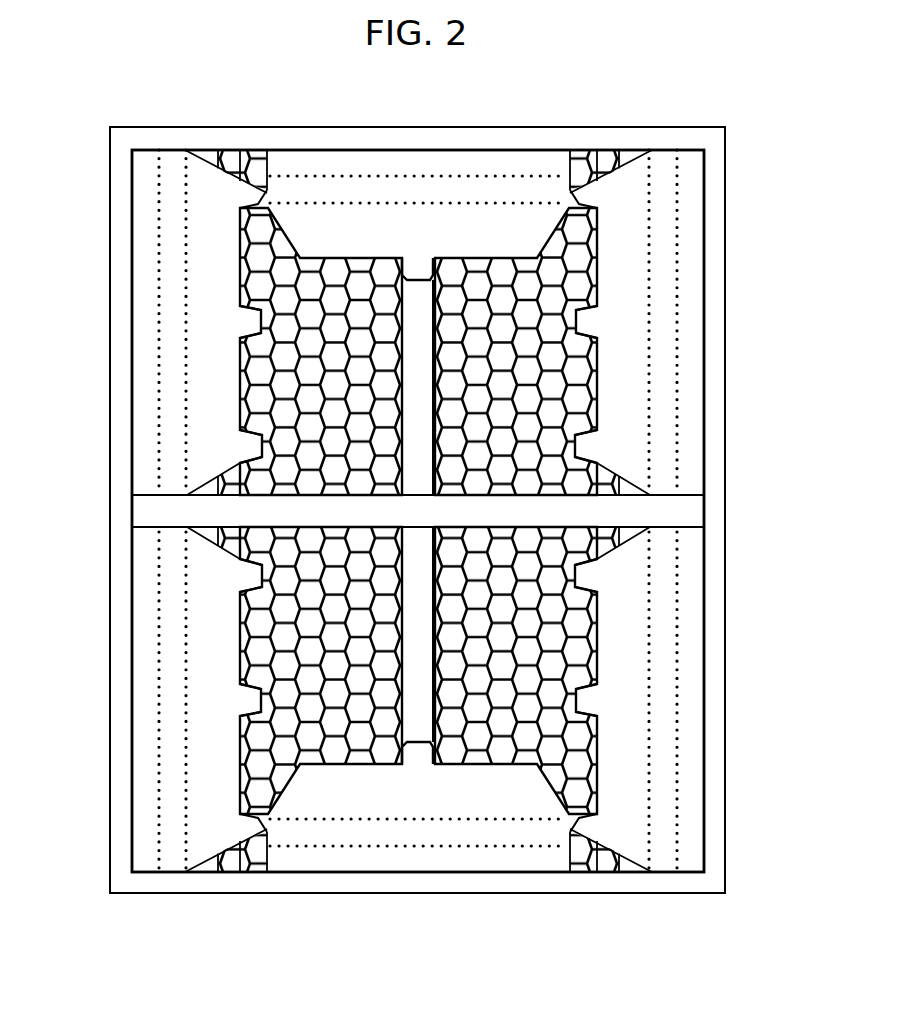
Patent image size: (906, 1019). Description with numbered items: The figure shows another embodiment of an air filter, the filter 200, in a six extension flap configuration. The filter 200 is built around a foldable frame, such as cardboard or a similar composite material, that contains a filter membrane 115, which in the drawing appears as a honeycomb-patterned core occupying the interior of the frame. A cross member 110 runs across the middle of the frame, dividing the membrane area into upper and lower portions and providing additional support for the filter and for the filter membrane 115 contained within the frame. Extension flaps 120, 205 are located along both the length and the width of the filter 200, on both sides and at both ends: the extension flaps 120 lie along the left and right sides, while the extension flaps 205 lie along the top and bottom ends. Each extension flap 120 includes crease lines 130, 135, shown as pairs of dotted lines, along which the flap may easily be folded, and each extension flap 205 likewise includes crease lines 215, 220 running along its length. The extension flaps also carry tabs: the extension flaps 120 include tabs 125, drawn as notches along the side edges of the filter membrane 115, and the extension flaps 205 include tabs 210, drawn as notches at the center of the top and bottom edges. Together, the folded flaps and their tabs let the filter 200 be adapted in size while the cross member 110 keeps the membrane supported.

The filter 200 is at (247, 70).
The extension flap 205 is at (368, 862).
The extension flap 120 is at (143, 288).
The cross member 110 is at (692, 508).
The crease line 130 is at (158, 238).
The crease line 135 is at (186, 190).
The crease line 220 is at (315, 173).
The crease line 215 is at (510, 203).
The filter membrane 115 is at (358, 736).
The tab 125 is at (247, 450).
The tab 210 is at (432, 262).